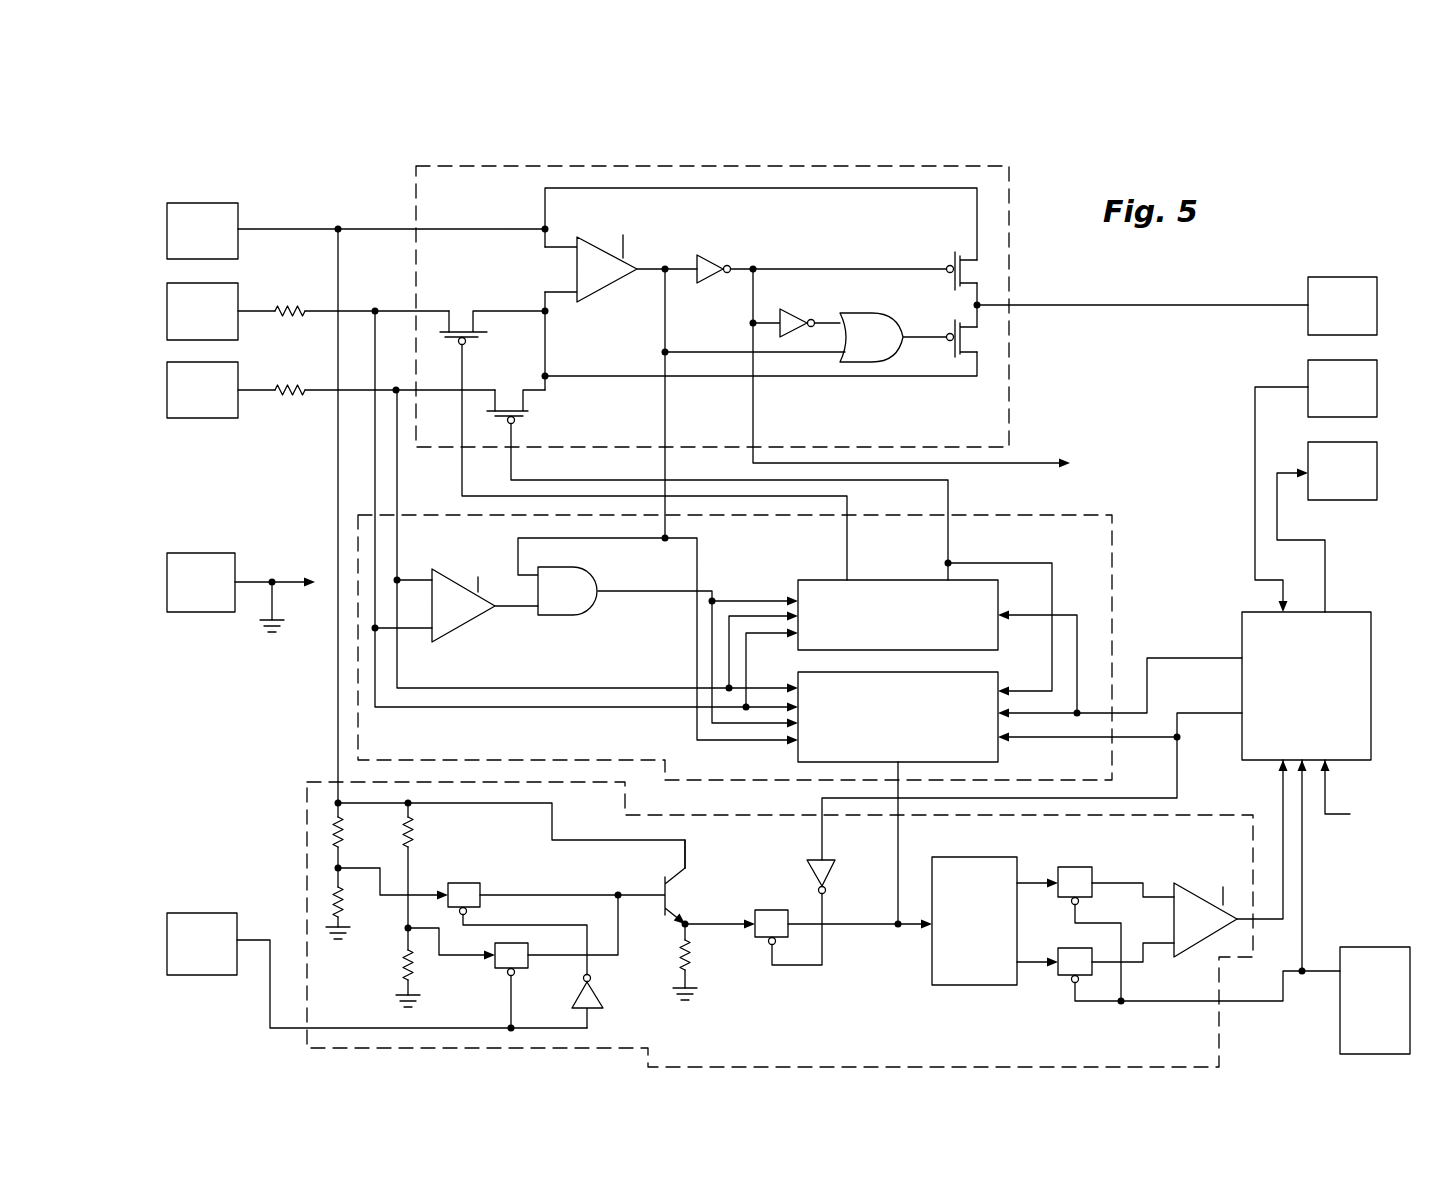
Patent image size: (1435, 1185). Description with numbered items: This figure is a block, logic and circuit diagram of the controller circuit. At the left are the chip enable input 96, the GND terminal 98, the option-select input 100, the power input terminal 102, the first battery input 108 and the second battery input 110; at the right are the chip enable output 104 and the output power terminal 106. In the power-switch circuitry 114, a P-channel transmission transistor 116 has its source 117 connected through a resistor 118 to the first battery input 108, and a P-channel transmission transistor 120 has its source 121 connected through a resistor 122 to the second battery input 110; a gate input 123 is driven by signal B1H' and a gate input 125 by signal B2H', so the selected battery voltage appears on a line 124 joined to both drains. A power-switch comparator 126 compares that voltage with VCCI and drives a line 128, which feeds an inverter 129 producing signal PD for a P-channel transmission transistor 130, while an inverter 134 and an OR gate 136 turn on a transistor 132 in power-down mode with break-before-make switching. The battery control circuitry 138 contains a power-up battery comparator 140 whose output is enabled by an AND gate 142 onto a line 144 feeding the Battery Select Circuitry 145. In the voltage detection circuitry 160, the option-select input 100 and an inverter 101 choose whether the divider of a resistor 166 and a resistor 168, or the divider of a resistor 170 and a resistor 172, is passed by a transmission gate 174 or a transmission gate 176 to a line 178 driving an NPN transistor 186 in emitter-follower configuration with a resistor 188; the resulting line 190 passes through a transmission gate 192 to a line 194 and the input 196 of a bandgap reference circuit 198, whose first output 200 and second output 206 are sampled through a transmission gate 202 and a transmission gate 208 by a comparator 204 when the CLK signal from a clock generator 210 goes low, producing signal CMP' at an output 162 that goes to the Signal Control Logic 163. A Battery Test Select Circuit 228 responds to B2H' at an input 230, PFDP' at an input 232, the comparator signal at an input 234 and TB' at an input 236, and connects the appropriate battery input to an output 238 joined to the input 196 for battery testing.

The chip enable input 96 is at (1378, 400).
The GND terminal 98 is at (213, 612).
The option-select input 100 is at (180, 978).
The inverter 101 is at (578, 995).
The power input terminal 102 is at (166, 252).
The chip enable output 104 is at (1378, 478).
The output power terminal 106 is at (1378, 295).
The first battery input 108 is at (166, 333).
The second battery input 110 is at (166, 401).
The power-switch circuitry 114 is at (712, 306).
The P-channel transmission transistor 116 is at (476, 306).
The source 117 is at (449, 308).
The resistor 118 is at (292, 301).
The P-channel transmission transistor 120 is at (513, 397).
The source 121 is at (497, 396).
The resistor 122 is at (292, 379).
The gate input 123 is at (460, 344).
The line 124 is at (545, 358).
The gate input 125 is at (515, 424).
The power-switch comparator 126 is at (600, 300).
The line 128 is at (663, 300).
The inverter 129 is at (710, 256).
The P-channel transmission transistor 130 is at (1000, 264).
The transistor 132 is at (1000, 345).
The inverter 134 is at (798, 312).
The OR gate 136 is at (880, 322).
The battery control circuitry 138 is at (735, 647).
The power-up battery comparator 140 is at (455, 626).
The AND gate 142 is at (557, 610).
The line 144 is at (632, 590).
The Battery Select Circuitry 145 is at (797, 583).
The voltage detection circuitry 160 is at (780, 924).
The output 162 is at (1283, 804).
The Signal Control Logic 163 is at (1371, 700).
The resistor 166 is at (348, 838).
The resistor 168 is at (350, 905).
The resistor 170 is at (418, 838).
The resistor 172 is at (400, 970).
The transmission gate 174 is at (462, 882).
The transmission gate 176 is at (495, 968).
The line 178 is at (635, 890).
The NPN transistor 186 is at (690, 880).
The resistor 188 is at (695, 960).
The line 190 is at (720, 920).
The transmission gate 192 is at (760, 945).
The line 194 is at (862, 920).
The input 196 is at (958, 920).
The bandgap reference circuit 198 is at (995, 940).
The first output 200 is at (1020, 883).
The transmission gate 202 is at (1085, 866).
The comparator 204 is at (1185, 876).
The second output 206 is at (1020, 960).
The transmission gate 208 is at (1065, 978).
The clock generator 210 is at (1375, 1000).
The Battery Test Select Circuit 228 is at (818, 671).
The input 230 is at (988, 690).
The input 232 is at (998, 716).
The input 234 is at (810, 747).
The input 236 is at (990, 750).
The output 238 is at (900, 757).